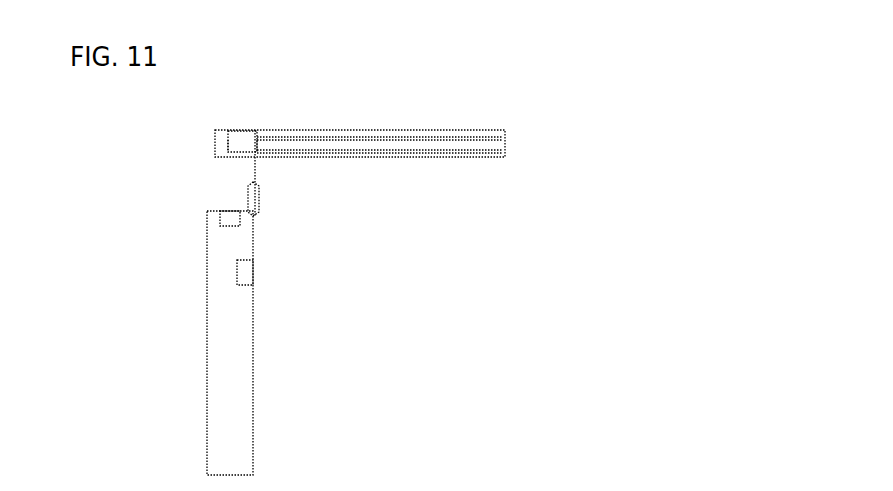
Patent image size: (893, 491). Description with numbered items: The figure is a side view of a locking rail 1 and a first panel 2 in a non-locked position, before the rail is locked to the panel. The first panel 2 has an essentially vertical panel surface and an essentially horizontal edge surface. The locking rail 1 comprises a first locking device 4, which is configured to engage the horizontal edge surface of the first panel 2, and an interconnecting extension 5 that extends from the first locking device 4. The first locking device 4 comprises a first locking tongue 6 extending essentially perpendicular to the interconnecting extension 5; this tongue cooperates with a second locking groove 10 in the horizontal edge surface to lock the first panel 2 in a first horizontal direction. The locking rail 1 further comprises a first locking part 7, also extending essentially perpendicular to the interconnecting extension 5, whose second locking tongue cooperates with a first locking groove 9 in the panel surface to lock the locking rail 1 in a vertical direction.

The locking rail 1 is at (355, 121).
The first panel 2 is at (239, 380).
The first locking device 4 is at (247, 129).
The interconnecting extension 5 is at (423, 142).
The first locking tongue 6 is at (230, 145).
The first locking part 7 is at (253, 170).
The first locking groove 9 is at (245, 273).
The second locking groove 10 is at (232, 218).